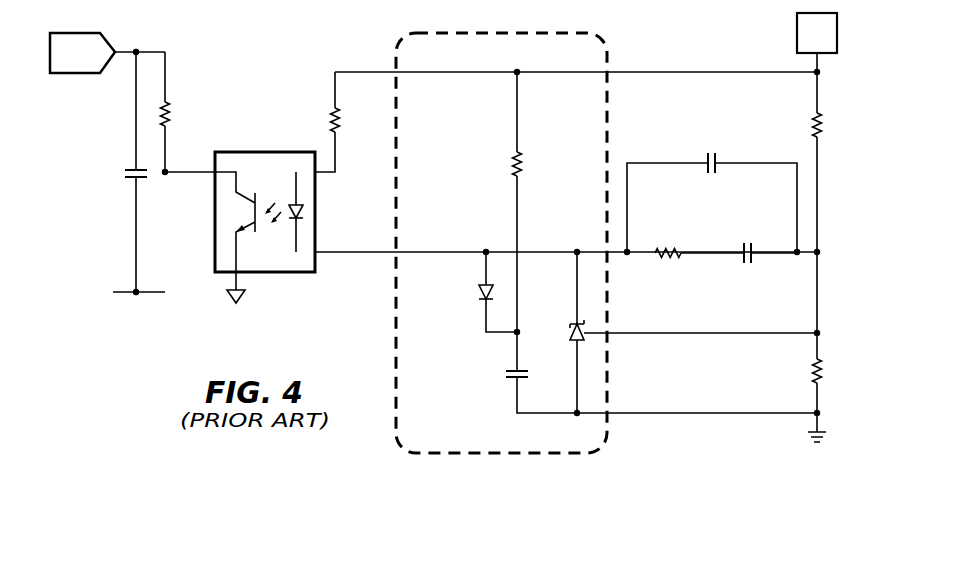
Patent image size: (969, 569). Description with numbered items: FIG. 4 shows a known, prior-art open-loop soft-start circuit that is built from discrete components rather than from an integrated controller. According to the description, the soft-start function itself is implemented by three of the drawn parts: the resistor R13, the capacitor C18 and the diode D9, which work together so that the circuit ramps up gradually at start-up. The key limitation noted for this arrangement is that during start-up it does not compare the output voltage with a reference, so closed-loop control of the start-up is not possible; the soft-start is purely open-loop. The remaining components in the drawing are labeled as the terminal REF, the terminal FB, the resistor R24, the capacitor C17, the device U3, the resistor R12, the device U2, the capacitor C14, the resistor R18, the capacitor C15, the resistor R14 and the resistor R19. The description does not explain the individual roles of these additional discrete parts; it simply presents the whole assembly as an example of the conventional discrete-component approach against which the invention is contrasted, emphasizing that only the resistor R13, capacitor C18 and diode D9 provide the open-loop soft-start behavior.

The reference voltage terminal REF is at (82, 53).
The feedback terminal FB is at (817, 33).
The resistor 2K R24 is at (183, 112).
The capacitor 0.01uF C17 is at (103, 171).
The optocoupler TCMT1107 U3 is at (265, 186).
The resistor 1K R12 is at (352, 122).
The resistor R13 is at (538, 168).
The diode D9 is at (454, 296).
The capacitor C18 is at (497, 376).
The shunt regulator TLV431ACDBVR U2 is at (651, 325).
The capacitor 33pF C14 is at (712, 134).
The resistor 86.6K R18 is at (666, 227).
The capacitor 1000pF C15 is at (747, 226).
The resistor 41.2K R14 is at (844, 131).
The resistor 13.3K R19 is at (844, 376).